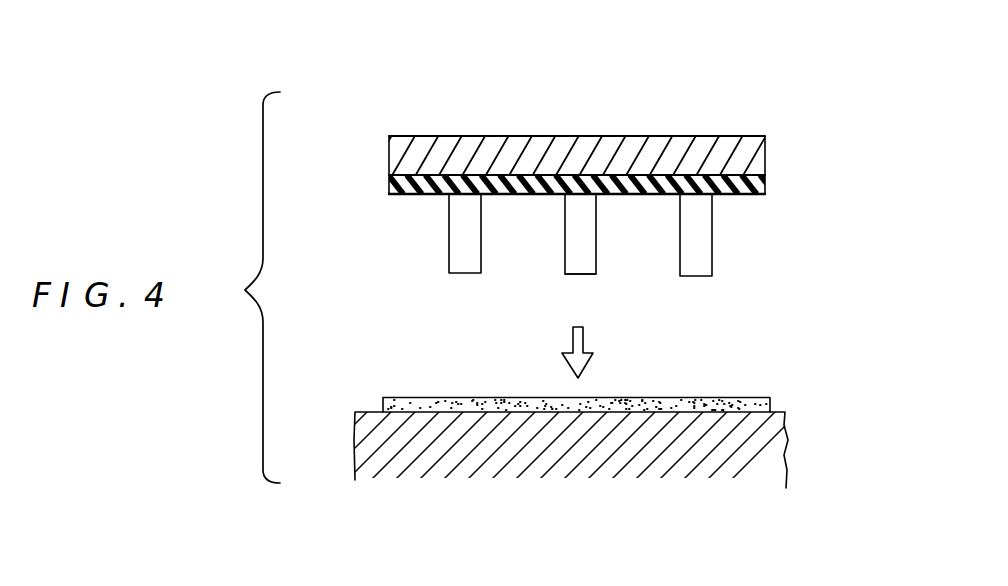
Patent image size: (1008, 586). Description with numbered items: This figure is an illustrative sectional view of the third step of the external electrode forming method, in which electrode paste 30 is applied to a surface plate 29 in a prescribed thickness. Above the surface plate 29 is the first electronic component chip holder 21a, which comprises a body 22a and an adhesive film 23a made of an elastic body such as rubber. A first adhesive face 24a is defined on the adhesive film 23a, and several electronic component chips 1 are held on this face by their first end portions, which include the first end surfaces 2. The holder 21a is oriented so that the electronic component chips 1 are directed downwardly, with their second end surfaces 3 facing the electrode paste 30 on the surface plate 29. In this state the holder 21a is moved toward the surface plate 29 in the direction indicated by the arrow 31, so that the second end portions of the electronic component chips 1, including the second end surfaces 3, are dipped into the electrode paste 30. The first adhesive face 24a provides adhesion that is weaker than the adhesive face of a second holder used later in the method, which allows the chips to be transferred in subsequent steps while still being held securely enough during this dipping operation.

The electronic component chip 1 is at (716, 258).
The first end surface 2 is at (585, 175).
The second end surface 3 is at (578, 275).
The first electronic component chip holder 21a is at (774, 149).
The body 22a is at (388, 145).
The adhesive film 23a is at (390, 187).
The first adhesive face 24a is at (762, 195).
The surface plate 29 is at (783, 460).
The electrode paste 30 is at (772, 403).
The arrow 31 is at (585, 340).